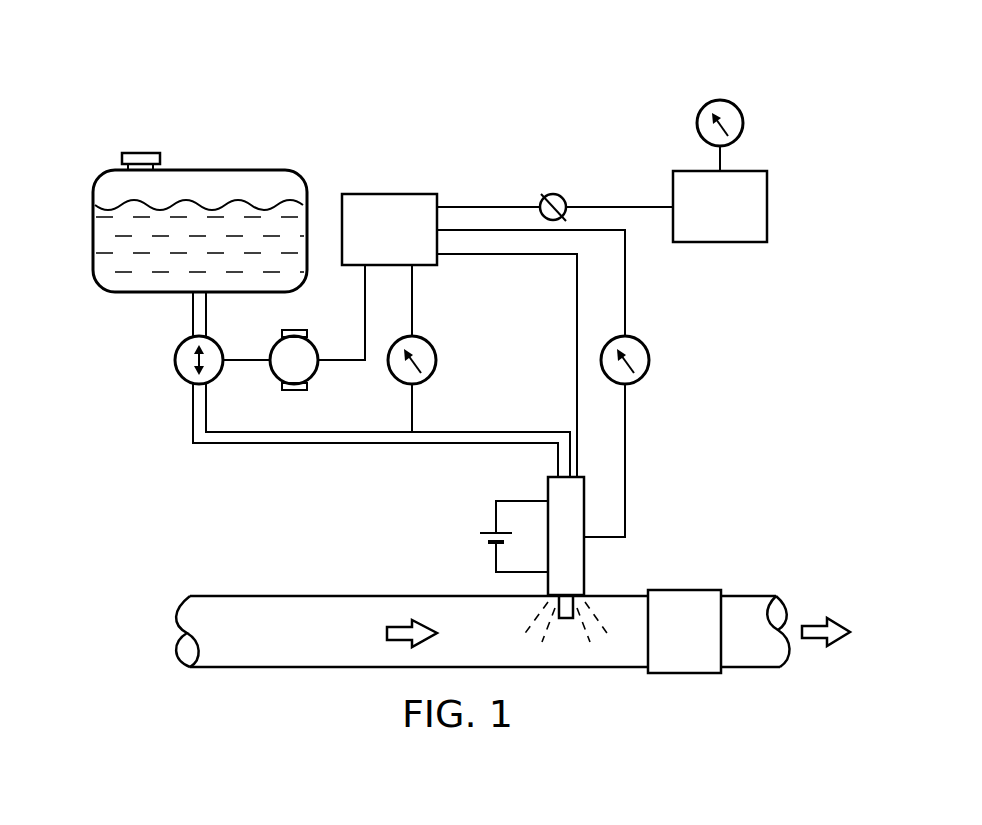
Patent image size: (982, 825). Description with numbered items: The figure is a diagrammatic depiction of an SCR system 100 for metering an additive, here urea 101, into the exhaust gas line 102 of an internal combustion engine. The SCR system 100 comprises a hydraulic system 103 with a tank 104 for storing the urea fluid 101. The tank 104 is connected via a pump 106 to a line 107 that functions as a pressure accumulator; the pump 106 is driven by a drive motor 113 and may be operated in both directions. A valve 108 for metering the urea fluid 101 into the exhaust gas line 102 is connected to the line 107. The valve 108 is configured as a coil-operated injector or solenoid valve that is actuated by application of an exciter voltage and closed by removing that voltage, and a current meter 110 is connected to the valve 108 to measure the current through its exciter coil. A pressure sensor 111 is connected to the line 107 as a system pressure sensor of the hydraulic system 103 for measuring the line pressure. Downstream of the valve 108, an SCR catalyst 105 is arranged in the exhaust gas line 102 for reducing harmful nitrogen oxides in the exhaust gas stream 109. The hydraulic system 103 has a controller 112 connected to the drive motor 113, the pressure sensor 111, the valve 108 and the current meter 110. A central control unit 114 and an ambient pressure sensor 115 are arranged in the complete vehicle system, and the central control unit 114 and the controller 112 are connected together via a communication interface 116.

The SCR system 100 is at (138, 52).
The urea 101 is at (100, 242).
The exhaust gas line 102 is at (342, 596).
The hydraulic system 103 is at (156, 485).
The tank 104 is at (198, 170).
The SCR catalyst 105 is at (683, 590).
The pump 106 is at (177, 355).
The line 107 is at (375, 444).
The valve 108 is at (548, 490).
The exhaust gas stream 109 is at (392, 641).
The current meter 110 is at (650, 358).
The pressure sensor 111 is at (438, 358).
The controller 112 is at (390, 194).
The drive motor 113 is at (277, 343).
The central control unit 114 is at (770, 193).
The ambient pressure sensor 115 is at (737, 103).
The communication interface 116 is at (558, 195).